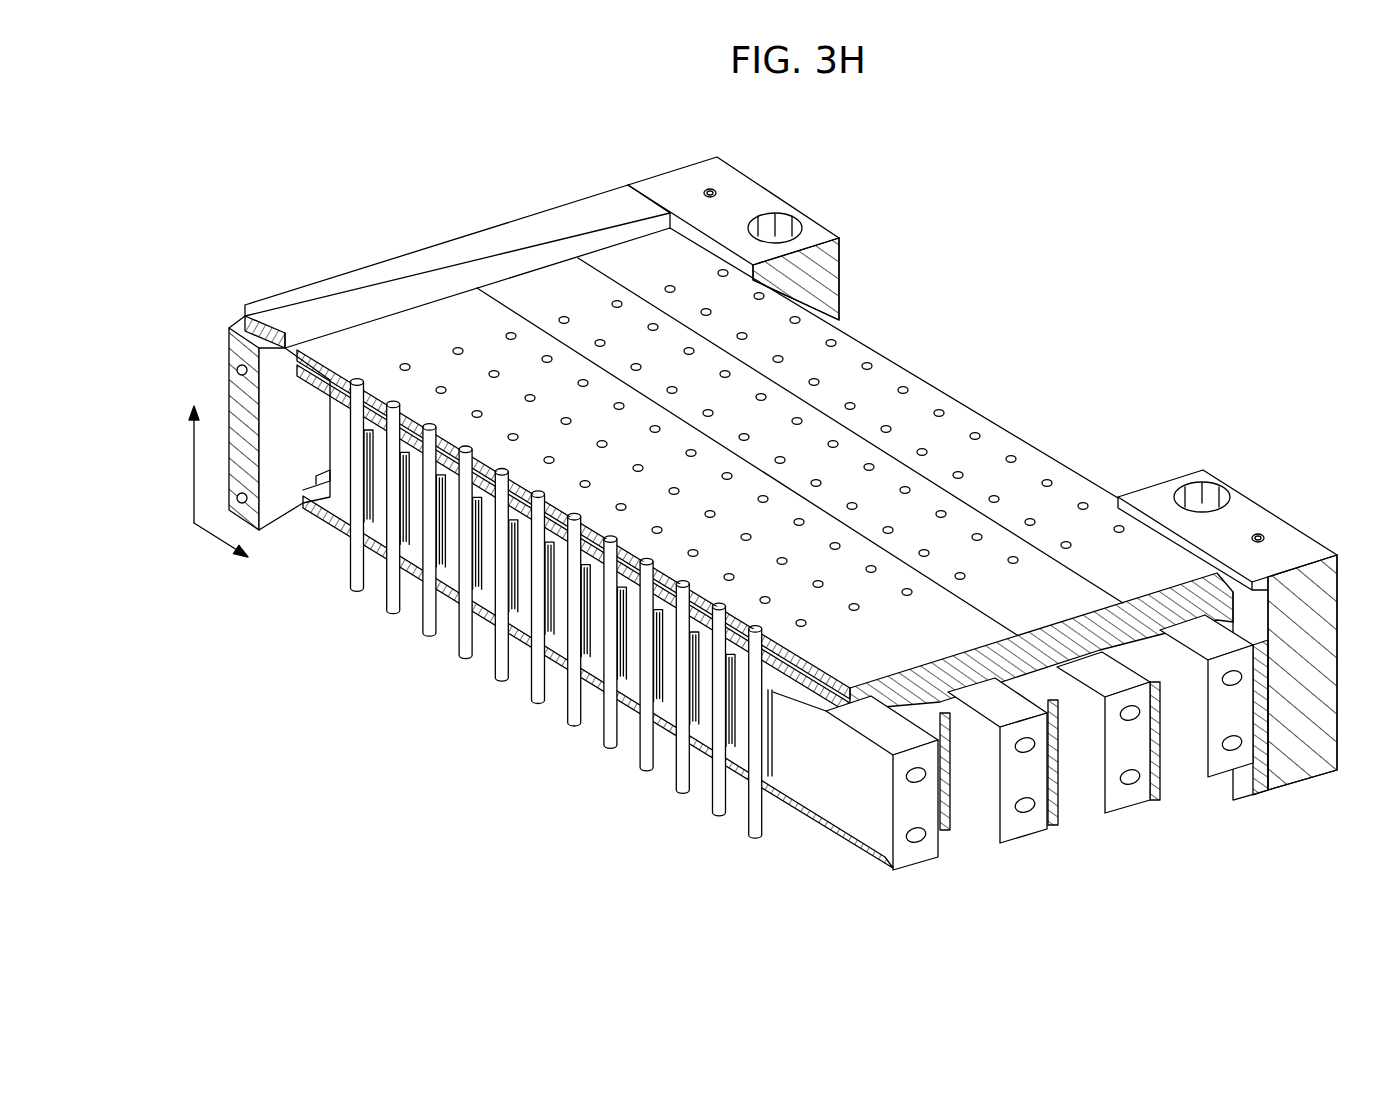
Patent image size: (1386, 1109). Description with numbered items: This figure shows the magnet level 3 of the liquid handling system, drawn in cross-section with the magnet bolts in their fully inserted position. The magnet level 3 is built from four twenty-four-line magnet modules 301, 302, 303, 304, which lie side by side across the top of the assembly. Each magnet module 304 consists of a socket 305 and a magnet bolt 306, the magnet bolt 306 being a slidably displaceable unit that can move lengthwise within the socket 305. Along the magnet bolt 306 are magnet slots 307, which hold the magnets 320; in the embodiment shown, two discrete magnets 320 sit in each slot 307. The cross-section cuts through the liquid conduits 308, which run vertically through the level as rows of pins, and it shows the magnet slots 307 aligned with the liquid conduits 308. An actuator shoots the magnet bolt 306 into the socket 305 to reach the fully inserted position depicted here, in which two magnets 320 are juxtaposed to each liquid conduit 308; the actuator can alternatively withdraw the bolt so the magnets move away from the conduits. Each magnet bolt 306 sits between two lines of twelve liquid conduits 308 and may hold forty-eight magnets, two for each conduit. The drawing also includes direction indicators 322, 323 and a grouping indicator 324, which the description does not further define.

The magnet level 3 is at (1117, 246).
The magnet module 301 is at (360, 355).
The magnet module 302 is at (448, 325).
The magnet module 303 is at (550, 297).
The magnet module 304 is at (640, 262).
The socket 305 is at (965, 700).
The magnet bolt 306 is at (897, 853).
The magnet slot 307 is at (773, 773).
The liquid conduit 308 is at (747, 825).
The magnet 320 is at (773, 710).
The vertical direction 322 is at (192, 480).
The lateral direction 323 is at (210, 537).
The mounting structure 324 is at (1282, 822).